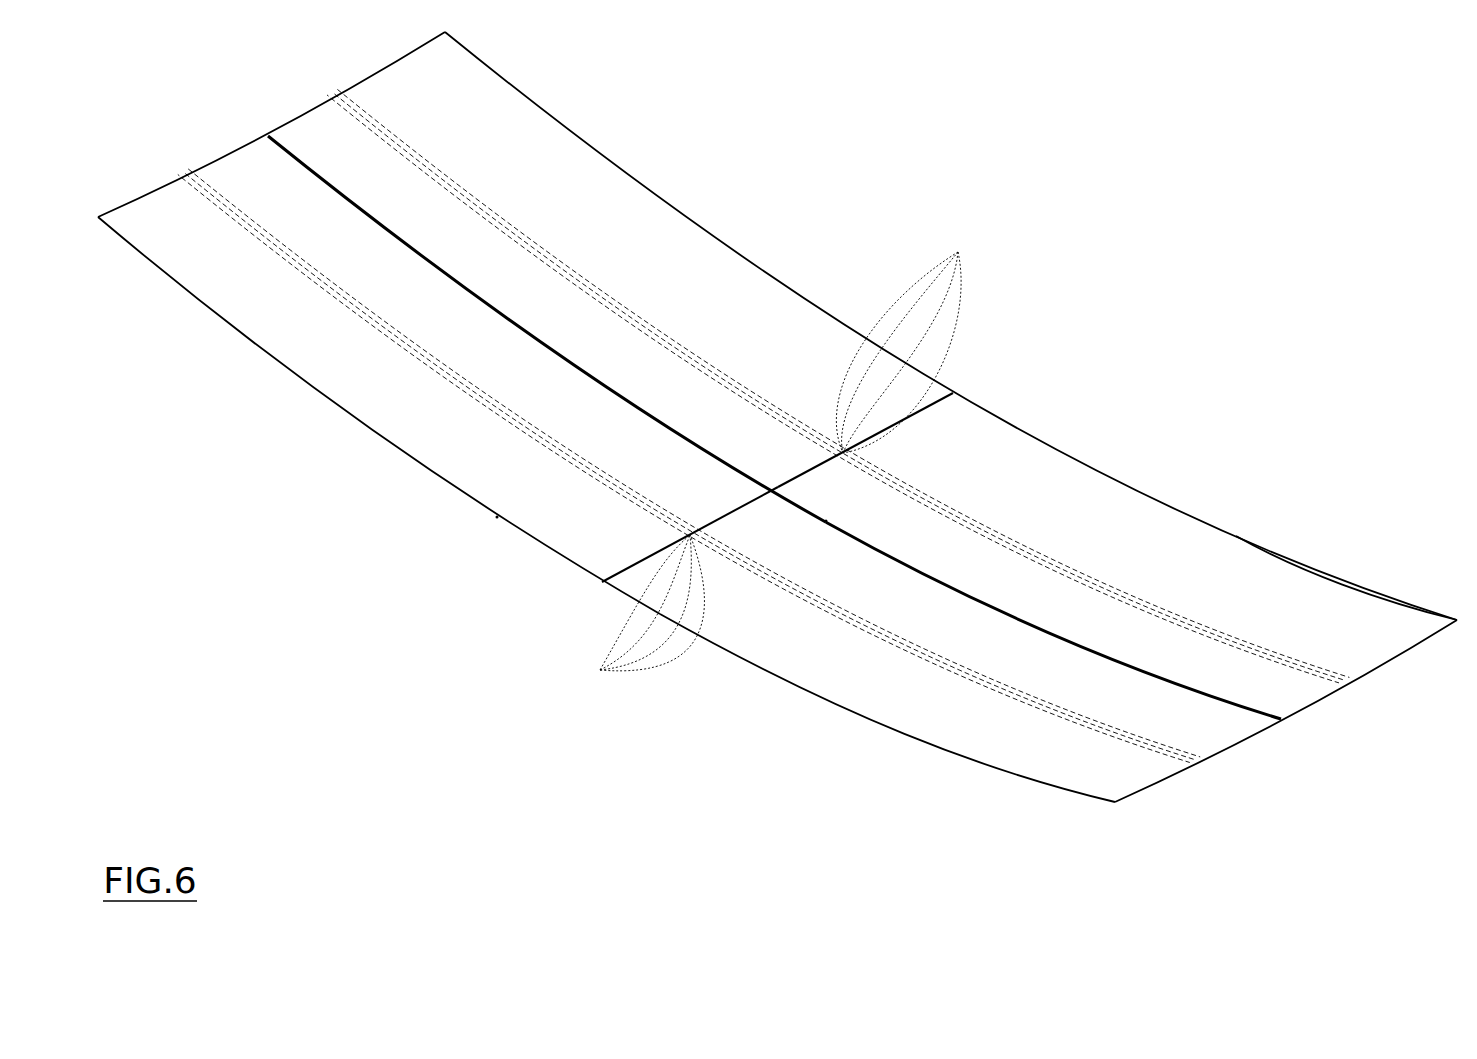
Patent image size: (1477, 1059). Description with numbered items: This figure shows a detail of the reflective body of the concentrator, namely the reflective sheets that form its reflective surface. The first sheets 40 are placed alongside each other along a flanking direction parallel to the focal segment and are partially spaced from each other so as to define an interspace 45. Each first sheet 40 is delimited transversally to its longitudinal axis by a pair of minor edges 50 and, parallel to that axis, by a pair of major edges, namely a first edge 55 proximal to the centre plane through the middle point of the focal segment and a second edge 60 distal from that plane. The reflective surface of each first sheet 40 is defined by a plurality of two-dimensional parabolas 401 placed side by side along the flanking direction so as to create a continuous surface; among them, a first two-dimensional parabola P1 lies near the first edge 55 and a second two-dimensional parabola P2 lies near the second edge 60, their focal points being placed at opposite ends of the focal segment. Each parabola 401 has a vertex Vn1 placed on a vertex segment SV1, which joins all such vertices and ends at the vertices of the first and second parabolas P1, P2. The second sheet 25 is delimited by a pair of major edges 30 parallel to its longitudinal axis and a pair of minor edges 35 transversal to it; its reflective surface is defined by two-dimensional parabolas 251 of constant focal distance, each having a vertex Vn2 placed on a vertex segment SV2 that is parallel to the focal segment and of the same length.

The second sheet 25 is at (995, 448).
The two-dimensional parabolas 251 is at (1163, 601).
The major edges 30 is at (642, 183).
The minor edges 35 is at (363, 80).
The first sheets 40 is at (930, 692).
The two-dimensional parabolas 401 is at (827, 630).
The interspace 45 is at (1118, 662).
The minor edges 50 is at (210, 157).
The first edge 55 is at (510, 317).
The second edge 60 is at (627, 601).
The first two-dimensional parabola P1 is at (830, 518).
The second two-dimensional parabola P2 is at (497, 517).
The vertex segment SV1 is at (587, 558).
The vertex segment SV2 is at (947, 388).
The vertex Vn1 is at (631, 619).
The vertex Vn2 is at (916, 334).